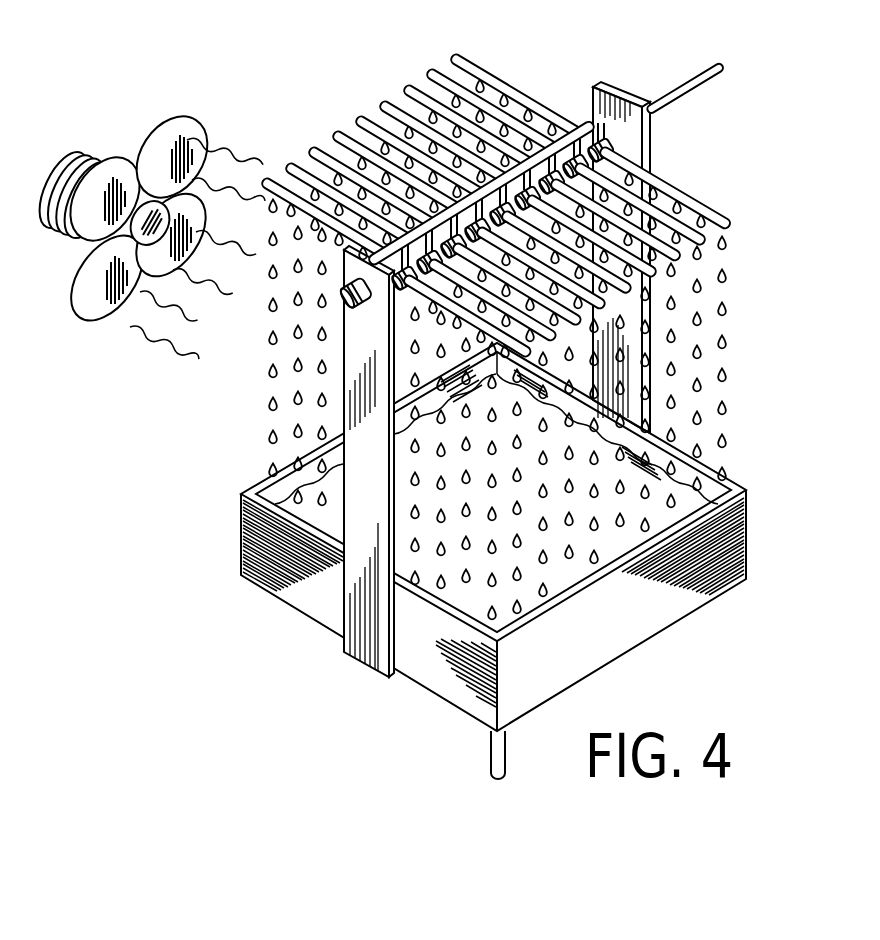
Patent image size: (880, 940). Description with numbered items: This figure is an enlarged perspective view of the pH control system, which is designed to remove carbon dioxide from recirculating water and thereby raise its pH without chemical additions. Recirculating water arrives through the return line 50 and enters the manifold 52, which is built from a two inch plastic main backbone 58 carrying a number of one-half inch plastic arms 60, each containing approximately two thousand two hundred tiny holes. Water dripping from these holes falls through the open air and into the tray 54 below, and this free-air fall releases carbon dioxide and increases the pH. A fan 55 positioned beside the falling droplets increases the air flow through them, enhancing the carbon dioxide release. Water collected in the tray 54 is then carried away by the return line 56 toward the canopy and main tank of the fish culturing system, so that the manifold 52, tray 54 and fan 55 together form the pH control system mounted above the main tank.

The return line 50 is at (691, 93).
The manifold 52 is at (522, 89).
The tray 54 is at (718, 597).
The fan 55 is at (173, 113).
The return line 56 is at (494, 751).
The main backbone 58 is at (577, 132).
The arms 60 is at (707, 208).